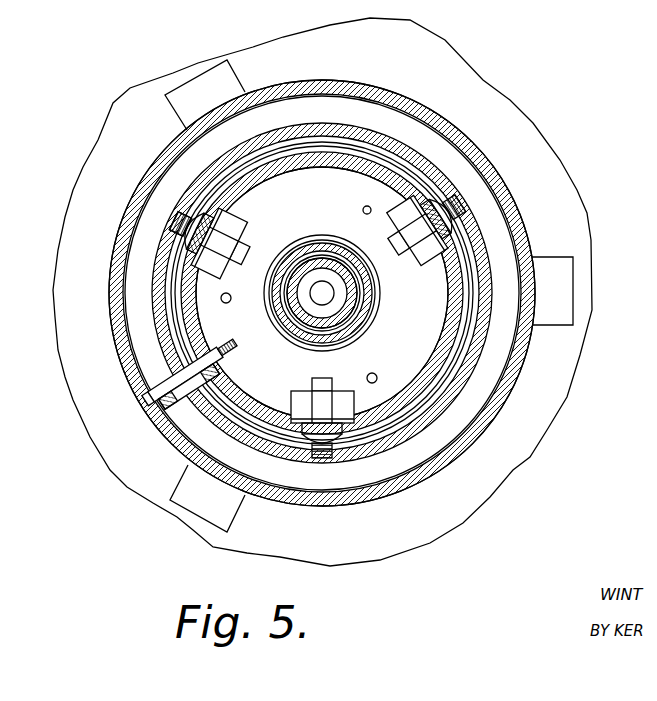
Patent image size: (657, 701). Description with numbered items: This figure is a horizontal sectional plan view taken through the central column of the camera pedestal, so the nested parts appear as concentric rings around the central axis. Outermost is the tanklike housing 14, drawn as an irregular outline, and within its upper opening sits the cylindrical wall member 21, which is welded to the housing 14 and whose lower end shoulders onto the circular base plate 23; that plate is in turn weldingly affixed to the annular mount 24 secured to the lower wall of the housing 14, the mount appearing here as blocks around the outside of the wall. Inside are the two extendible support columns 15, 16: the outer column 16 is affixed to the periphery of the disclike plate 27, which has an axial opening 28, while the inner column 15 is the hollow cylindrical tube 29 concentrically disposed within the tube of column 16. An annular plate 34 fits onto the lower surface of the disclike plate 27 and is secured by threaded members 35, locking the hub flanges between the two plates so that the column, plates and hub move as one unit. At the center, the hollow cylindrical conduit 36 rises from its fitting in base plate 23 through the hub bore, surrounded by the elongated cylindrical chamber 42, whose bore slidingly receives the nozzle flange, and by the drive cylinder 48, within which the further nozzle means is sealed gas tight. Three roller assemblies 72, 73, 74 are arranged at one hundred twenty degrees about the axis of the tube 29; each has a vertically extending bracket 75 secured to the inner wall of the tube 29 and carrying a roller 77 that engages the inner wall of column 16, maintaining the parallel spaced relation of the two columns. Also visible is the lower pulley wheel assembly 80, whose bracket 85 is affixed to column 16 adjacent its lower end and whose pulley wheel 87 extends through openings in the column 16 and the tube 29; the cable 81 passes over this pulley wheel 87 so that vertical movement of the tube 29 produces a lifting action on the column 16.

The housing 14 is at (572, 175).
The support column 15 is at (425, 397).
The support column 16 is at (485, 367).
The cylindrical wall member 21 is at (477, 144).
The circular base plate 23 is at (343, 496).
The annular mount 24 is at (195, 80).
The disclike plate 27 is at (322, 293).
The axial opening 28 is at (374, 325).
The hollow cylindrical tube 29 is at (447, 340).
The annular plate 34 is at (400, 465).
The threaded members 35 is at (362, 210).
The hollow cylindrical conduit 36 is at (290, 297).
The elongated cylindrical chamber 42 is at (341, 333).
The drive cylinder 48 is at (302, 252).
The roller assembly 72 is at (438, 269).
The roller assembly 73 is at (246, 214).
The roller assembly 74 is at (295, 404).
The bracket 75 is at (217, 264).
The roller 77 is at (183, 221).
The pulley wheel assembly 80 is at (148, 399).
The cable 81 is at (188, 386).
The bracket 85 is at (193, 369).
The pulley wheel 87 is at (227, 347).